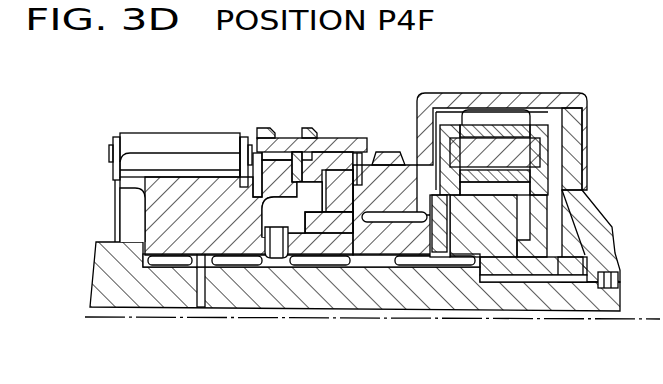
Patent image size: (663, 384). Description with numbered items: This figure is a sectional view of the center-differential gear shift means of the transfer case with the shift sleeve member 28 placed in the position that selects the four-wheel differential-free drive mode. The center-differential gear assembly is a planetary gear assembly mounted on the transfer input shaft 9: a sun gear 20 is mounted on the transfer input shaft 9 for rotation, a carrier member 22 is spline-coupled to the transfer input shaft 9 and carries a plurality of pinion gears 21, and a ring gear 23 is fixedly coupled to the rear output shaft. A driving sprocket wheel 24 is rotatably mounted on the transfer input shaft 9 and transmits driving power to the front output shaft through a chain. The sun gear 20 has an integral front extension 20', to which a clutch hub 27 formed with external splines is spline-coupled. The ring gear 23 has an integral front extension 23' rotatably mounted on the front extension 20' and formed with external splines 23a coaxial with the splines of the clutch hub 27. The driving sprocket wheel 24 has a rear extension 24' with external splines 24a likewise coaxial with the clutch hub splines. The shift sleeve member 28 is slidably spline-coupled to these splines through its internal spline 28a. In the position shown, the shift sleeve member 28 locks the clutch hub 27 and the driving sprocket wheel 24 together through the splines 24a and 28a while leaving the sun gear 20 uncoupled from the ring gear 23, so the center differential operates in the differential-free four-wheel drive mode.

The transfer input shaft 9 is at (517, 297).
The sun gear 20 is at (508, 275).
The front extension of the sun gear 20' is at (311, 307).
The pinion gears 21 is at (497, 125).
The carrier member 22 is at (540, 127).
The ring gear 23 is at (470, 144).
The front extension of the ring gear 23' is at (488, 275).
The external splines of the ring gear front extension 23a is at (388, 152).
The driving sprocket wheel 24 is at (197, 194).
The rear extension of the driving sprocket wheel 24' is at (219, 134).
The external splines of the sprocket rear extension 24a is at (257, 132).
The clutch hub 27 is at (342, 227).
The shift sleeve member 28 is at (270, 127).
The internal spline of the shift sleeve member 28a is at (295, 152).